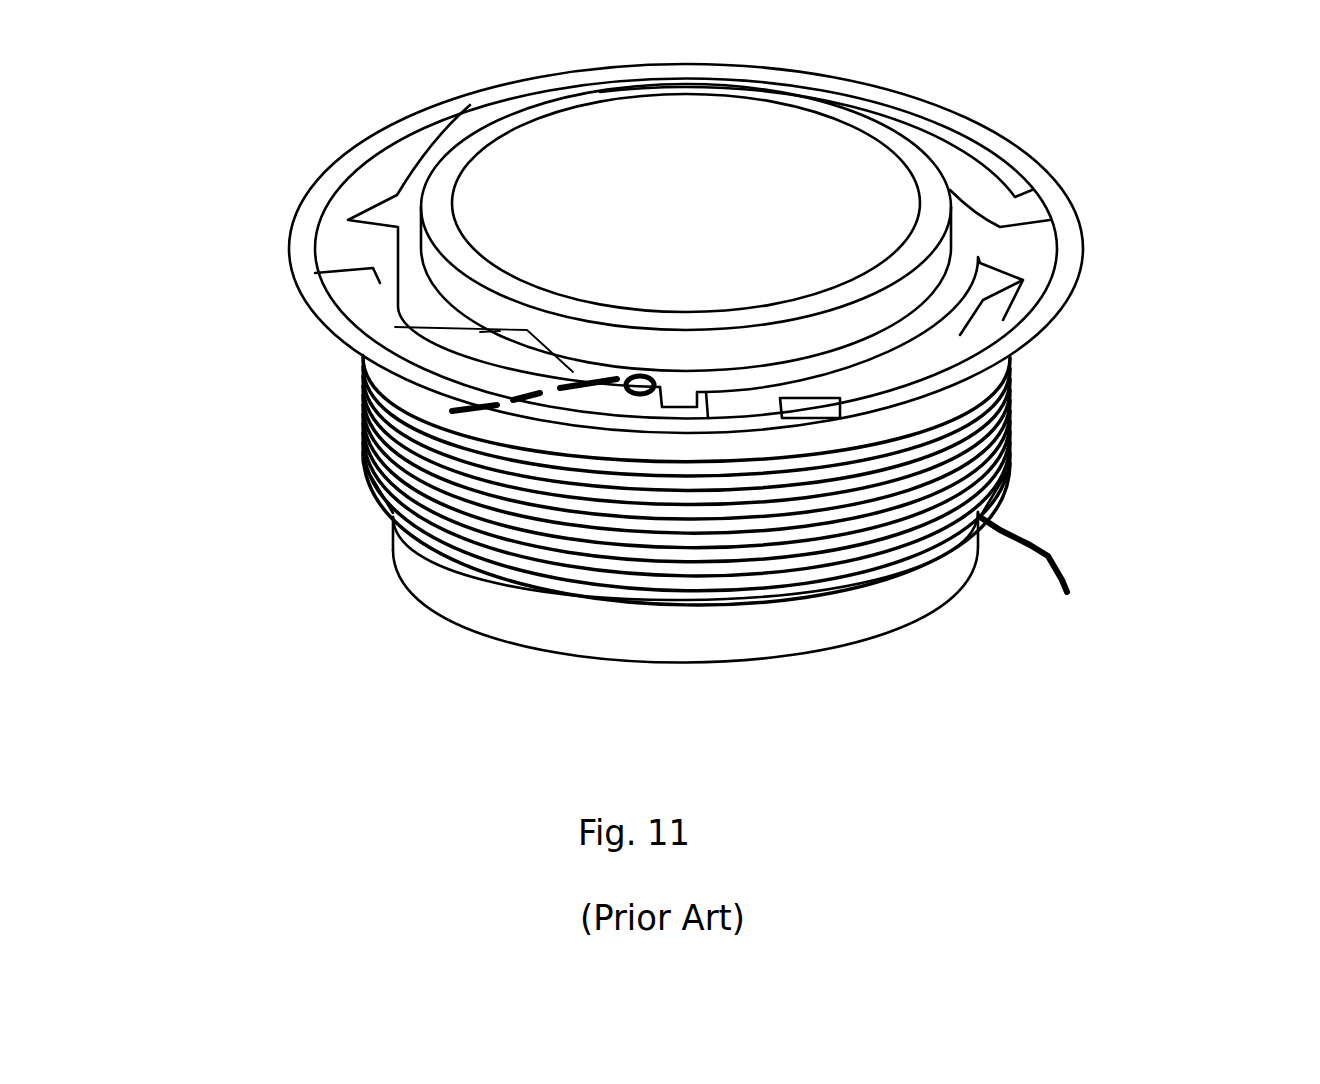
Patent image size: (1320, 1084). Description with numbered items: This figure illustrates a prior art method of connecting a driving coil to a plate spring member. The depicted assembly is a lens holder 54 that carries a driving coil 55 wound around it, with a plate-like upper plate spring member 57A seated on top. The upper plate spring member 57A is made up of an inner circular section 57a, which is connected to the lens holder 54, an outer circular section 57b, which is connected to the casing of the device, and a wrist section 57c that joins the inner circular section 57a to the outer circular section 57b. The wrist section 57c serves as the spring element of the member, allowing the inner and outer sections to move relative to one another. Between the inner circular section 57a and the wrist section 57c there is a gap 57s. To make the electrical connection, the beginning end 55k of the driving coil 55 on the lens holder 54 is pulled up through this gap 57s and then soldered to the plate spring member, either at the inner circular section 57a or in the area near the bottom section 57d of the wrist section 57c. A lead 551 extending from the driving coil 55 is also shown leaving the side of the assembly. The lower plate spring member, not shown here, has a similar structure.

The upper plate spring member 57A is at (1030, 207).
The outer circular section 57b is at (305, 246).
The gap 57s is at (395, 327).
The beginning end 55k is at (455, 350).
The wrist section 57c is at (490, 332).
The bottom section 57d is at (650, 400).
The inner circular section 57a is at (690, 382).
The driving coil 55 is at (1005, 408).
The coil lead wire 551 is at (1043, 548).
The lens holder 54 is at (883, 603).